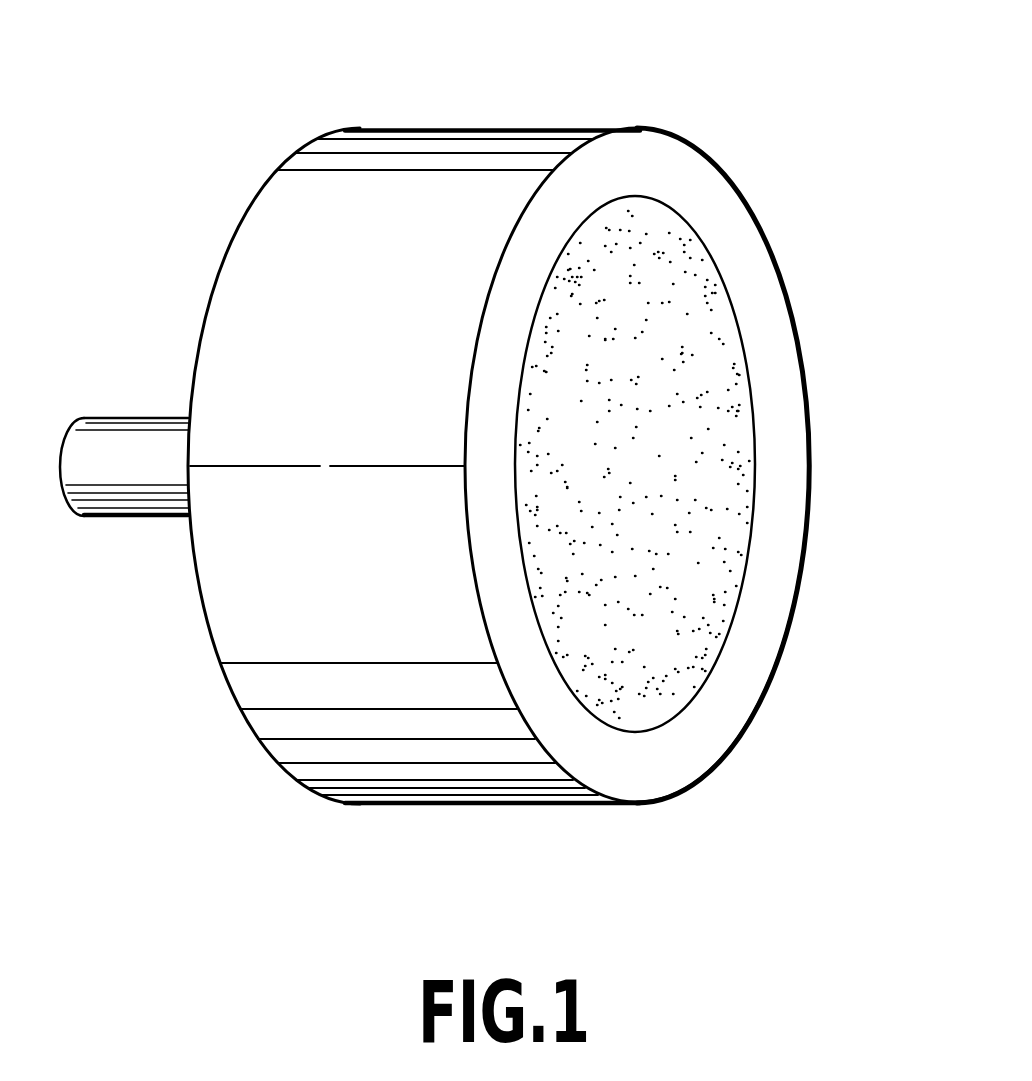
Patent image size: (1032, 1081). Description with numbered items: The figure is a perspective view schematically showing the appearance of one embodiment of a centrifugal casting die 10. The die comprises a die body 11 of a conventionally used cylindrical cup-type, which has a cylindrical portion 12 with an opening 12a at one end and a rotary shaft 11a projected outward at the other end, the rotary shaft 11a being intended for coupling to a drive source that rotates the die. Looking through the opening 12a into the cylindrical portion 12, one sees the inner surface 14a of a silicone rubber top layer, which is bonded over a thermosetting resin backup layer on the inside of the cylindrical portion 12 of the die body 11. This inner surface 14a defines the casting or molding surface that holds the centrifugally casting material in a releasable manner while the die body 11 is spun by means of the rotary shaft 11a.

The centrifugal casting die 10 is at (236, 144).
The die body 11 is at (196, 334).
The rotary shaft 11a is at (113, 491).
The cylindrical portion 12 is at (450, 148).
The opening 12a is at (722, 515).
The inner surface of the top layer 14a is at (710, 390).